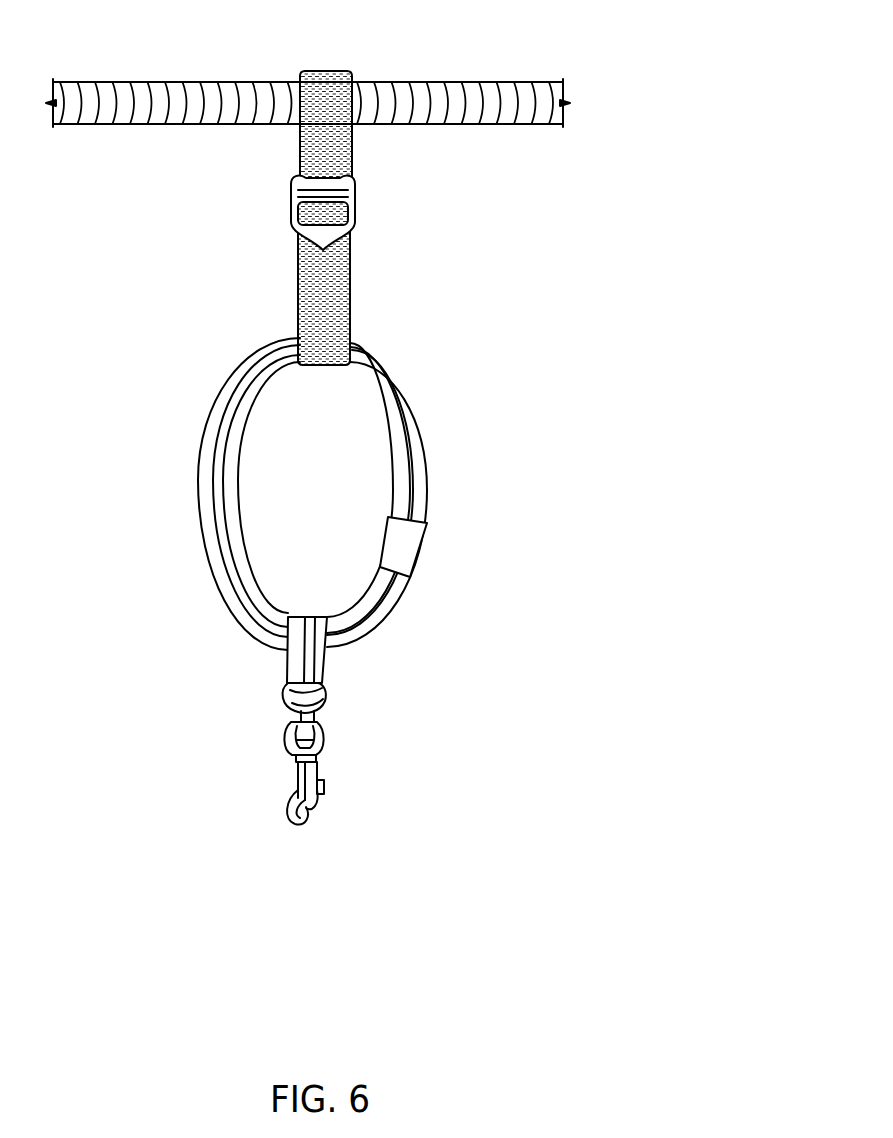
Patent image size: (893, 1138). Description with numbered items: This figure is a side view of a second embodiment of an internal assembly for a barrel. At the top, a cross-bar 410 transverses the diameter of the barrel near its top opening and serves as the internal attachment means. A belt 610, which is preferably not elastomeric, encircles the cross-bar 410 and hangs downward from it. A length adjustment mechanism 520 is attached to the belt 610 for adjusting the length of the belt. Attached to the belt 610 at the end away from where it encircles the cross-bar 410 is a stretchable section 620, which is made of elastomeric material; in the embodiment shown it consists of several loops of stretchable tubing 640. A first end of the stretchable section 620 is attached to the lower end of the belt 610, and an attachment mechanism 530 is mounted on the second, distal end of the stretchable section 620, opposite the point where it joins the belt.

The cross-bar 410 is at (133, 83).
The length adjustment mechanism 520 is at (290, 199).
The belt 610 is at (297, 273).
The stretchable section 620 is at (202, 471).
The stretchable tubing 640 is at (285, 667).
The attachment mechanism 530 is at (290, 792).